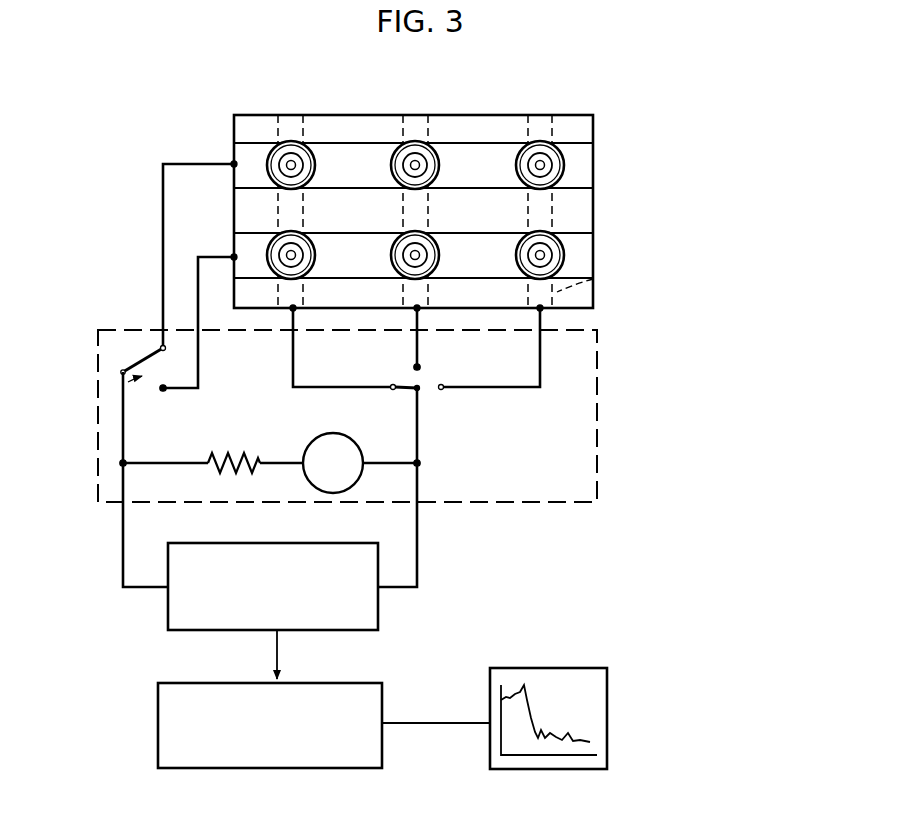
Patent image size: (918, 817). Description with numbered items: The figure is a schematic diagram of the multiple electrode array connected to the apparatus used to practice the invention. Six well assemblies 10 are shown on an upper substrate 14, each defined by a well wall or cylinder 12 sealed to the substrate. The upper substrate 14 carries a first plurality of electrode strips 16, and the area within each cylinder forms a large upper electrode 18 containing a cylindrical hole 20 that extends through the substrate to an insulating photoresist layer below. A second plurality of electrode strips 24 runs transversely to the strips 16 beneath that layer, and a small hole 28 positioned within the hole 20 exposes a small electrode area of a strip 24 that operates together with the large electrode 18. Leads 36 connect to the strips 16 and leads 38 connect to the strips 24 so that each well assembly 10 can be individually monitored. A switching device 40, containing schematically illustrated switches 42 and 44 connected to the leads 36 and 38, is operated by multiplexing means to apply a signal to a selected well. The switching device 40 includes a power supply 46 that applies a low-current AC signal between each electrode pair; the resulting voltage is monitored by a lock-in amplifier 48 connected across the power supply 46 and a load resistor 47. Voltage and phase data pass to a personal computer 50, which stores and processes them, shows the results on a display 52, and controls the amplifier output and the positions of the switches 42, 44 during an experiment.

The well assembly 10 is at (323, 127).
The well wall or cylinder 12 is at (508, 158).
The upper substrate 14 is at (585, 209).
The first plurality of electrode strips 16 is at (582, 174).
The large upper electrode 18 is at (558, 171).
The cylindrical hole 20 is at (535, 158).
The second plurality of electrode strips 24 is at (596, 279).
The small hole 28 is at (552, 163).
The leads 36 is at (198, 283).
The leads 38 is at (419, 343).
The switching device 40 is at (590, 418).
The switch 42 is at (122, 380).
The switch 44 is at (432, 399).
The power supply 46 is at (330, 440).
The load resistor 47 is at (224, 455).
The lock-in amplifier 48 is at (166, 613).
The personal computer 50 is at (158, 712).
The display 52 is at (600, 710).